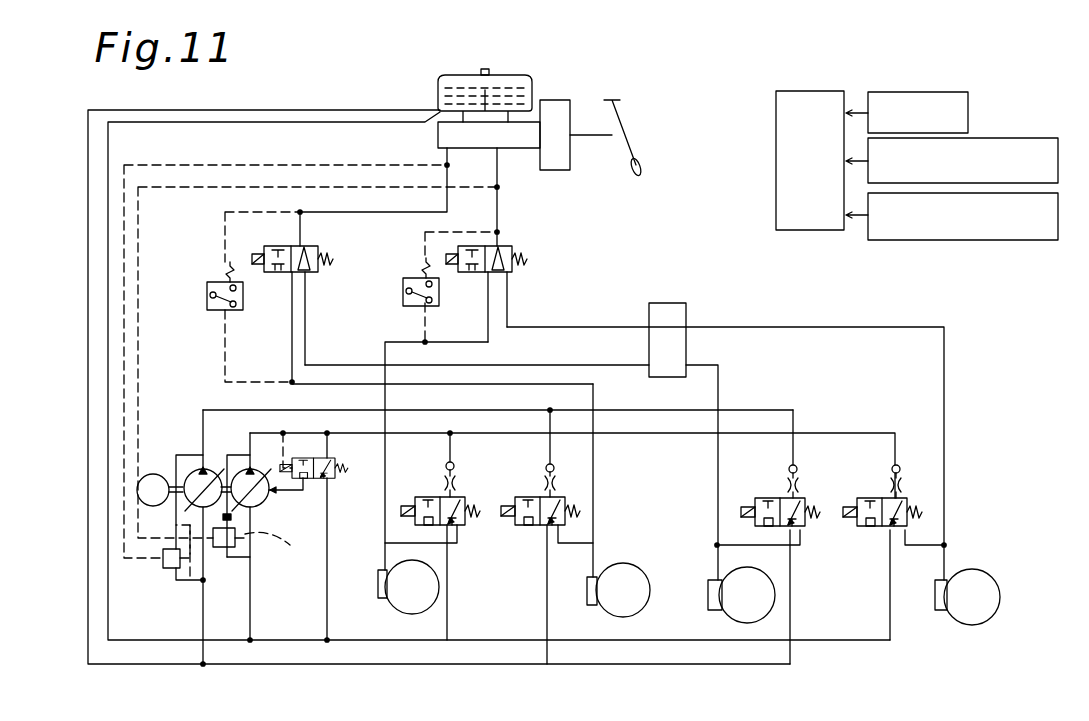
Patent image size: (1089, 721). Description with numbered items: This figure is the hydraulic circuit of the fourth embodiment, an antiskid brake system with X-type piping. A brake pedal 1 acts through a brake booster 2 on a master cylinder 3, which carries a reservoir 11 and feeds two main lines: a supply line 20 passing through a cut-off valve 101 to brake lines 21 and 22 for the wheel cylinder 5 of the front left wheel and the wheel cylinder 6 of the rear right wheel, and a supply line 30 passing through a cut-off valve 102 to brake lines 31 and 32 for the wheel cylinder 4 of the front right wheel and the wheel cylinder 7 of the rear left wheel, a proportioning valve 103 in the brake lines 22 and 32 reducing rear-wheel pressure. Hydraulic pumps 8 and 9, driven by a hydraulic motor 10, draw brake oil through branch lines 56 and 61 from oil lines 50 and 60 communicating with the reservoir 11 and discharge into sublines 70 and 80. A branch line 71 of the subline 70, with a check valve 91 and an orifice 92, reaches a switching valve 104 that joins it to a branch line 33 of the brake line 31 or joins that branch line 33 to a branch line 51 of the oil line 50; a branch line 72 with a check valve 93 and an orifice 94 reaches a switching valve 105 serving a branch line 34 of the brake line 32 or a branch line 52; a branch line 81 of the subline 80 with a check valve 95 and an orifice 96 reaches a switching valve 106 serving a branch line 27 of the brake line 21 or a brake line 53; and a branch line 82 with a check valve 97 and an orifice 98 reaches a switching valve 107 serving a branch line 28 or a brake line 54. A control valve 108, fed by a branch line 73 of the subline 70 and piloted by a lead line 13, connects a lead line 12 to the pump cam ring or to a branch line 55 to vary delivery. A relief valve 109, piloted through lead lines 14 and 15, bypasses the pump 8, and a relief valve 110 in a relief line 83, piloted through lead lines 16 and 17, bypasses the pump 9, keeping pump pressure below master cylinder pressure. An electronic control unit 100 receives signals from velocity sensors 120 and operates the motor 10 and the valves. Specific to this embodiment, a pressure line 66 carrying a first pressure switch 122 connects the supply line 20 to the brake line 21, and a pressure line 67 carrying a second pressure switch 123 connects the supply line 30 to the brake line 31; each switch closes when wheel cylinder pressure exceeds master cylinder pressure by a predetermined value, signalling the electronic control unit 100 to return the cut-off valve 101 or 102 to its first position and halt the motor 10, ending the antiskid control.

The brake pedal 1 is at (640, 165).
The brake booster 2 is at (570, 161).
The master cylinder 3 is at (530, 125).
The wheel cylinder 4 is at (382, 604).
The wheel cylinder 5 is at (642, 574).
The wheel cylinder 6 is at (722, 619).
The wheel cylinder 7 is at (948, 617).
The hydraulic pump 8 is at (262, 503).
The hydraulic pump 9 is at (206, 466).
The hydraulic motor 10 is at (154, 474).
The reservoir 11 is at (510, 80).
The lead line 12 is at (301, 492).
The lead line 13 is at (283, 449).
The lead line 14 is at (138, 387).
The lead line 15 is at (278, 542).
The lead line 16 is at (124, 362).
The lead line 17 is at (191, 581).
The supply line 20 is at (447, 212).
The brake line 21 is at (593, 505).
The brake line 22 is at (718, 505).
The branch line 27 is at (578, 542).
The branch line 28 is at (760, 543).
The supply line 30 is at (507, 212).
The brake line 31 is at (385, 535).
The brake line 32 is at (944, 388).
The branch line 33 is at (458, 548).
The branch line 34 is at (924, 547).
The oil line 50 is at (364, 122).
The branch line 51 is at (448, 588).
The branch line 52 is at (890, 633).
The brake line 53 is at (550, 630).
The brake line 54 is at (797, 597).
The branch line 55 is at (333, 577).
The branch line 56 is at (258, 614).
The oil line 60 is at (366, 110).
The branch line 61 is at (201, 625).
The pressure line 66 is at (225, 235).
The pressure line 67 is at (423, 237).
The subline 70 is at (492, 410).
The branch line 71 is at (456, 455).
The branch line 72 is at (898, 448).
The branch line 73 is at (338, 446).
The subline 80 is at (488, 384).
The branch line 81 is at (557, 455).
The branch line 82 is at (800, 456).
The relief line 83 is at (177, 581).
The check valve 91 is at (446, 466).
The orifice 92 is at (436, 486).
The check valve 93 is at (892, 469).
The orifice 94 is at (908, 488).
The check valve 95 is at (546, 467).
The orifice 96 is at (562, 486).
The check valve 97 is at (789, 468).
The orifice 98 is at (805, 488).
The electronic control unit 100 is at (809, 97).
The cut-off valve 101 is at (271, 296).
The cut-off valve 102 is at (473, 294).
The proportioning valve 103 is at (686, 310).
The switching valve 104 is at (468, 500).
The switching valve 105 is at (861, 532).
The switching valve 106 is at (530, 530).
The switching valve 107 is at (765, 499).
The control valve 108 is at (322, 480).
The relief valve 109 is at (237, 547).
The relief valve 110 is at (163, 562).
The velocity sensor 120 is at (913, 95).
The first pressure switch 122 is at (207, 300).
The second pressure switch 123 is at (403, 288).